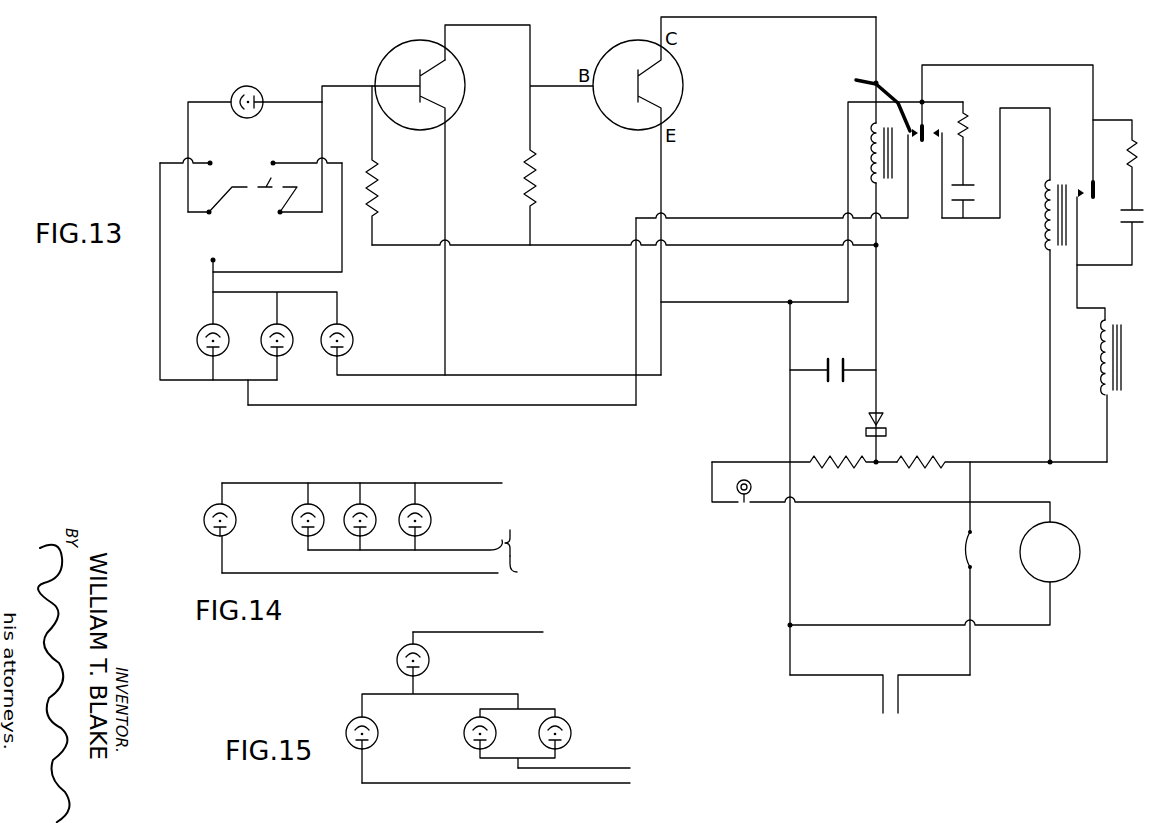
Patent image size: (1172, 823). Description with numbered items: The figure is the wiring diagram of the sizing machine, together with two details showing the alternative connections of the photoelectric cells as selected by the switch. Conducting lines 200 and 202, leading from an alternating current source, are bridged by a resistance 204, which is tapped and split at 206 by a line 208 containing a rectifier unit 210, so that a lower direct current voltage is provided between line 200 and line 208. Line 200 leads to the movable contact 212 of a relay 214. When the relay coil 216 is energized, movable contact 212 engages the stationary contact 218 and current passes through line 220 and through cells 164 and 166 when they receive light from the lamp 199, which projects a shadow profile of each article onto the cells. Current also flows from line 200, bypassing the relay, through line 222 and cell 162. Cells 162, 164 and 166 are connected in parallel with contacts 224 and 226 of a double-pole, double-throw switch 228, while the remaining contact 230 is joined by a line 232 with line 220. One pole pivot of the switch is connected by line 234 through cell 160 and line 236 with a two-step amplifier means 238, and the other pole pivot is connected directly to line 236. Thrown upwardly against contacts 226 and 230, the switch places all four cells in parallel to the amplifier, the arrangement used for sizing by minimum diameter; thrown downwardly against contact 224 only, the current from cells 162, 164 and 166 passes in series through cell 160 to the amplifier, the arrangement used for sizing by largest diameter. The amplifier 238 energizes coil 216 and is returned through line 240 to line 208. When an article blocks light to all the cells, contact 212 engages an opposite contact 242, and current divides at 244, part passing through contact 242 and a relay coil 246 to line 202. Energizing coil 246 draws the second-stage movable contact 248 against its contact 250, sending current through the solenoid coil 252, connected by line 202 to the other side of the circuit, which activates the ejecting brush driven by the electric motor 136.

In FIG. 13, the electric motor 136 is at (1081, 550).
In FIG. 13, the cell 160 is at (235, 94).
In FIG. 14, the cell 160 is at (433, 520).
In FIG. 15, the cell 160 is at (431, 660).
In FIG. 13, the cell 162 is at (351, 344).
In FIG. 14, the cell 162 is at (207, 510).
In FIG. 15, the cell 162 is at (380, 728).
In FIG. 13, the cell 164 is at (289, 353).
In FIG. 14, the cell 164 is at (353, 505).
In FIG. 15, the cell 164 is at (573, 732).
In FIG. 13, the cell 166 is at (203, 357).
In FIG. 14, the cell 166 is at (296, 530).
In FIG. 15, the cell 166 is at (463, 742).
In FIG. 13, the lamp 199 is at (758, 452).
In FIG. 13, the conducting line 200 is at (789, 396).
In FIG. 13, the conducting line 202 is at (1050, 330).
In FIG. 13, the resistance 204 is at (927, 458).
In FIG. 13, the tap 206 is at (878, 466).
In FIG. 13, the line 208 is at (879, 340).
In FIG. 13, the rectifier unit 210 is at (893, 421).
In FIG. 13, the movable contact 212 is at (924, 141).
In FIG. 13, the relay 214 is at (947, 64).
In FIG. 13, the relay coil 216 is at (870, 140).
In FIG. 13, the stationary contact 218 is at (857, 80).
In FIG. 13, the line 220 is at (704, 218).
In FIG. 14, the line 220 is at (517, 512).
In FIG. 15, the line 220 is at (615, 764).
In FIG. 13, the line 222 is at (518, 374).
In FIG. 14, the line 222 is at (365, 573).
In FIG. 15, the line 222 is at (618, 781).
In FIG. 13, the contact 224 is at (213, 261).
In FIG. 13, the contact 226 is at (272, 162).
In FIG. 13, the double-pole, double-throw switch 228 is at (258, 204).
In FIG. 13, the contact 230 is at (216, 156).
In FIG. 13, the line 232 is at (160, 285).
In FIG. 14, the line 232 is at (529, 543).
In FIG. 13, the line 234 is at (187, 122).
In FIG. 14, the line 234 is at (531, 561).
In FIG. 13, the line 236 is at (333, 86).
In FIG. 14, the line 236 is at (460, 473).
In FIG. 15, the line 236 is at (504, 631).
In FIG. 13, the amplifier means 238 is at (399, 46).
In FIG. 13, the line 240 is at (575, 248).
In FIG. 13, the contact 242 is at (938, 128).
In FIG. 13, the junction 244 is at (922, 100).
In FIG. 13, the relay coil 246 is at (1045, 232).
In FIG. 13, the movable contact 248 is at (1096, 189).
In FIG. 13, the contact 250 is at (1079, 188).
In FIG. 13, the coil 252 is at (1098, 367).